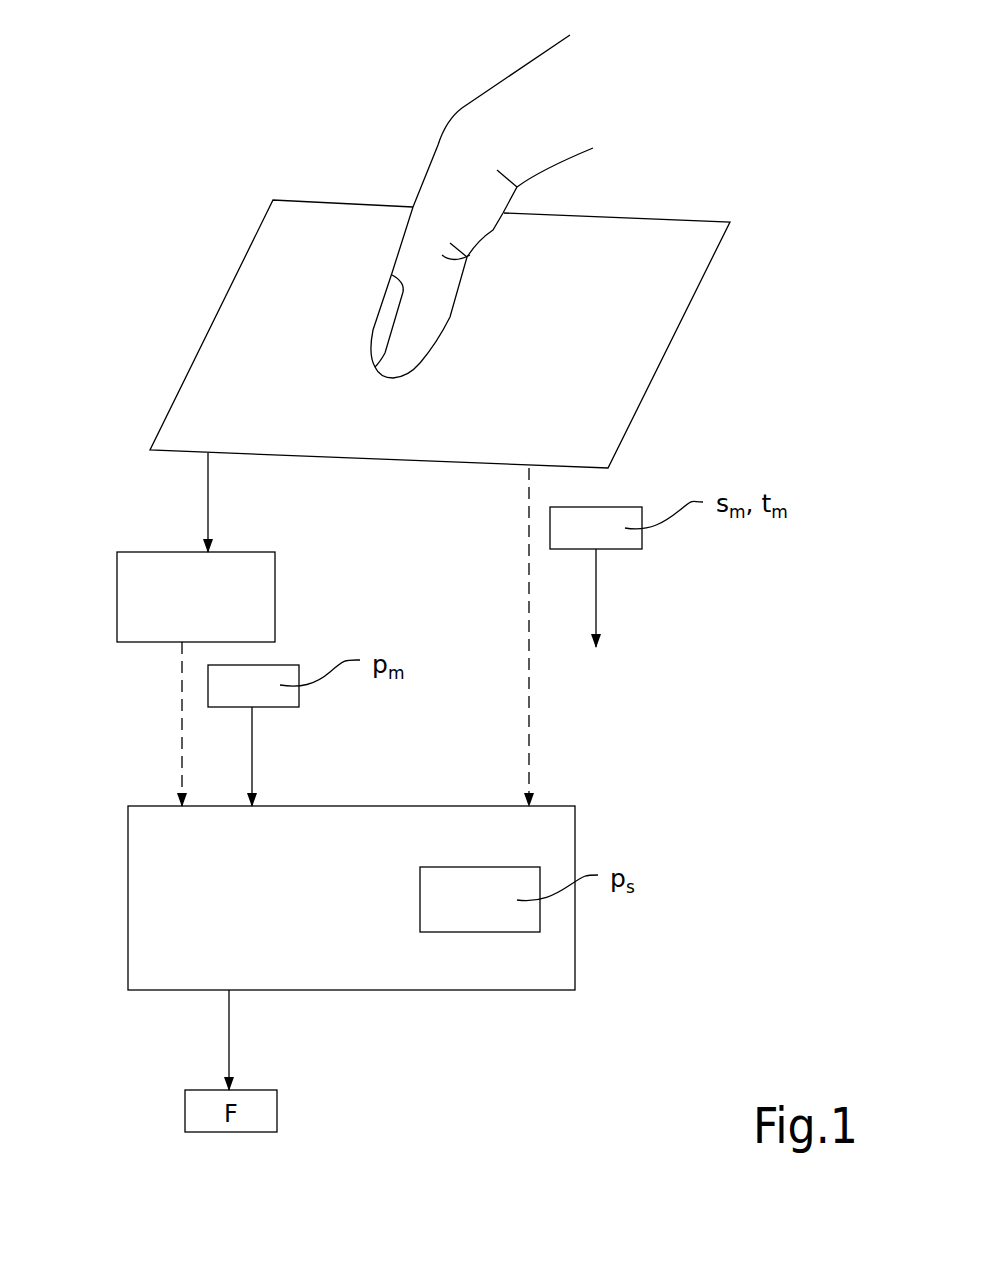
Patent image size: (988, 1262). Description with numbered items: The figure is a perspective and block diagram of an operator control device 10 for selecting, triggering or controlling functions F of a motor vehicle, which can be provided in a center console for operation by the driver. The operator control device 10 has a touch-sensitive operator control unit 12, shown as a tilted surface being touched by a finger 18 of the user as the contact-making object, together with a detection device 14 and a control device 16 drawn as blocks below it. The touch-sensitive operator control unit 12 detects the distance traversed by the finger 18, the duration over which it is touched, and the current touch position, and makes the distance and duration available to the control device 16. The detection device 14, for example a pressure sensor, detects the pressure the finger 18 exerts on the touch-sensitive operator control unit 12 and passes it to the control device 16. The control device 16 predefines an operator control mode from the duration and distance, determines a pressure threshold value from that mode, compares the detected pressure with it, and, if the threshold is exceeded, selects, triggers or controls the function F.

The operator control device 10 is at (250, 110).
The touch-sensitive operator control unit 12 is at (207, 380).
The detection device 14 is at (142, 602).
The control device 16 is at (145, 905).
The finger 18 is at (448, 173).